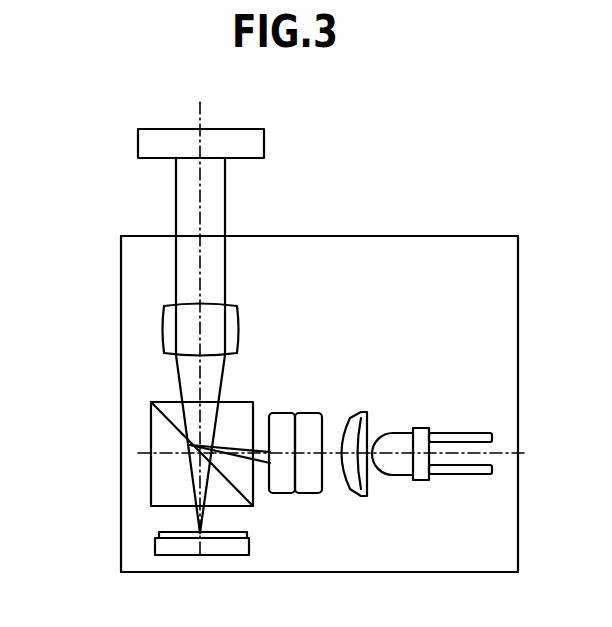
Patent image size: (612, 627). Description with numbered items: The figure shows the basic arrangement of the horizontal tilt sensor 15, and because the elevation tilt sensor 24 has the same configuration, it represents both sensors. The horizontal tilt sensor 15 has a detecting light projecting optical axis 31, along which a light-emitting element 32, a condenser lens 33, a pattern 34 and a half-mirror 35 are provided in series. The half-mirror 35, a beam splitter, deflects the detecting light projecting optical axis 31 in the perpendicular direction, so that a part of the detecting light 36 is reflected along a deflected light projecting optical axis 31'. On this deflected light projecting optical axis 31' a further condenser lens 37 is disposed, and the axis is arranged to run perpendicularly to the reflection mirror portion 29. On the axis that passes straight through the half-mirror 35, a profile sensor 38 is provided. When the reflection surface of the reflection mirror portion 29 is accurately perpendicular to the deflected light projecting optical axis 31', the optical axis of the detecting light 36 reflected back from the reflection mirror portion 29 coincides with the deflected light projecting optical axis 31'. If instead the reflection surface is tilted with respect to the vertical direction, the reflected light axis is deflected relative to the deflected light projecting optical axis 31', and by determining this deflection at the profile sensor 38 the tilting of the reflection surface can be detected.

The horizontal tilt sensor 15 is at (325, 341).
The elevation tilt sensor 24 is at (410, 235).
The reflection mirror portion 29 is at (138, 142).
The detecting light projecting optical axis 31 is at (297, 388).
The deflected light projecting optical axis 31' is at (256, 256).
The light-emitting element 32 is at (393, 433).
The condenser lens 33 is at (360, 496).
The pattern 34 is at (295, 494).
The half-mirror 35 is at (151, 424).
The detecting light 36 is at (222, 377).
The condenser lens 37 is at (162, 327).
The profile sensor 38 is at (155, 548).